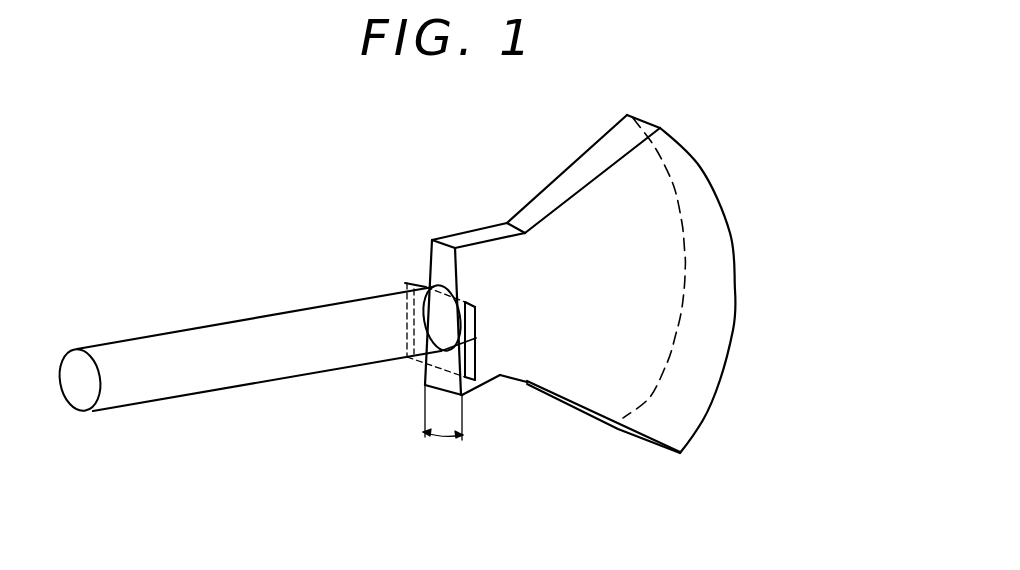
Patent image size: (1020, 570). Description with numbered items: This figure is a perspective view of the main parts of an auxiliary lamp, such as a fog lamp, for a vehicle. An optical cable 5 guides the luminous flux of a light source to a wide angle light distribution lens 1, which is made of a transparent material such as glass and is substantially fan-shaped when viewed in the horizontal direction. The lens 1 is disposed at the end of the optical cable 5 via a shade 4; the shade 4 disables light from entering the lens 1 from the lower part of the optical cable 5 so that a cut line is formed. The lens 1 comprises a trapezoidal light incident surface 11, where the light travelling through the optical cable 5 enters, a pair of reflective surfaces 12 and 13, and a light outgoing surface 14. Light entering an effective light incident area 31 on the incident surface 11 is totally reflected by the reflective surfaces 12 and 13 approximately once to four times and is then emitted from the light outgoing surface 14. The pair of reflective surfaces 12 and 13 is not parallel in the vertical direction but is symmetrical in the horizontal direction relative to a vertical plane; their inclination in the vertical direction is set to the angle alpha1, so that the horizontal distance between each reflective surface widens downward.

The wide angle light distribution lens 1 is at (517, 185).
The shade 4 is at (472, 347).
The optical cable 5 is at (233, 322).
The light incident surface 11 is at (440, 260).
The reflective surface 12 is at (577, 357).
The reflective surface 13 is at (597, 207).
The light outgoing surface 14 is at (700, 300).
The effective light incident area 31 is at (430, 314).
The angle between reflective surfaces alpha1 is at (443, 428).